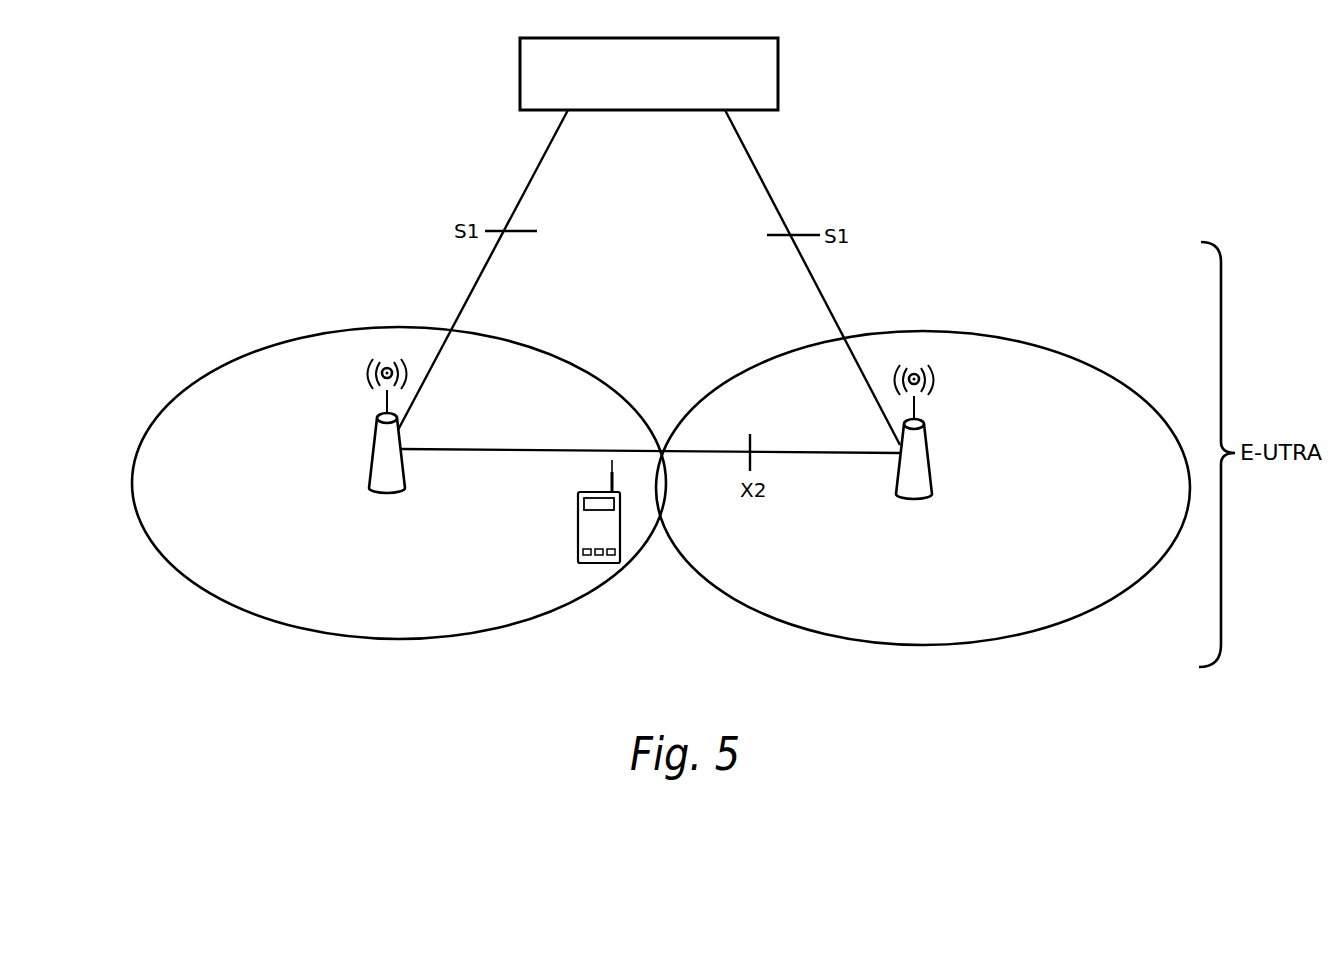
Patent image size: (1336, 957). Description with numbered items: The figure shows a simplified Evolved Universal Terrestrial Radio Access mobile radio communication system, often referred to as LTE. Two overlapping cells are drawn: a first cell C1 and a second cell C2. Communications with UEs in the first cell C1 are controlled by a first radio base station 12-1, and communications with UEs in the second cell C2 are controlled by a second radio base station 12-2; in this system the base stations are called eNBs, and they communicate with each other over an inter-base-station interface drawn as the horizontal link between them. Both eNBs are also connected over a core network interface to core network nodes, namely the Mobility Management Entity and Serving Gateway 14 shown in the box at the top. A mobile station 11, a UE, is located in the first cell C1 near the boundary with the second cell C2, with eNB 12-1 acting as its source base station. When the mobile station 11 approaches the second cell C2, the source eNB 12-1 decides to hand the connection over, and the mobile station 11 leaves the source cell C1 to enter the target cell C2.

The MME and S-GW 14 is at (778, 73).
The first radio base station 12-1 is at (378, 457).
The second radio base station 12-2 is at (928, 467).
The mobile station 11 is at (598, 562).
The first cell C1 is at (201, 378).
The second cell C2 is at (1070, 357).